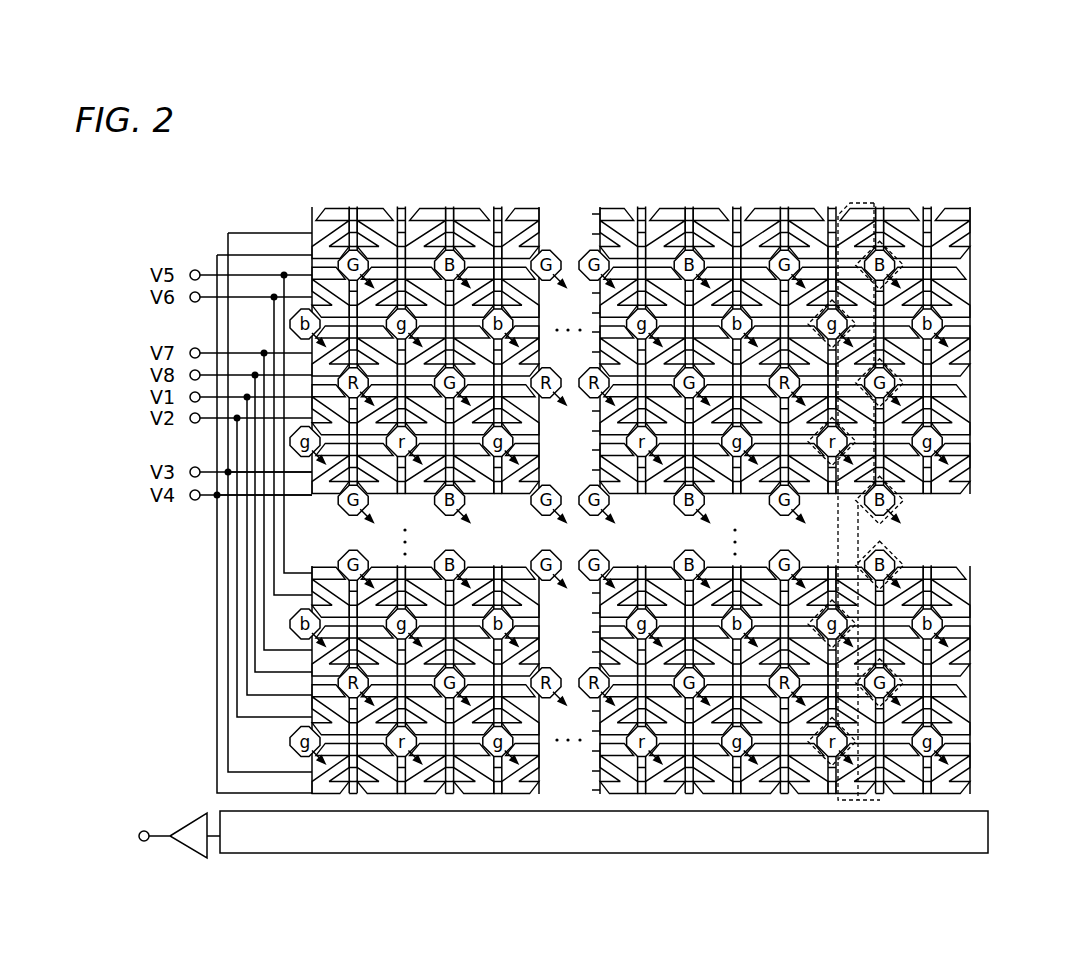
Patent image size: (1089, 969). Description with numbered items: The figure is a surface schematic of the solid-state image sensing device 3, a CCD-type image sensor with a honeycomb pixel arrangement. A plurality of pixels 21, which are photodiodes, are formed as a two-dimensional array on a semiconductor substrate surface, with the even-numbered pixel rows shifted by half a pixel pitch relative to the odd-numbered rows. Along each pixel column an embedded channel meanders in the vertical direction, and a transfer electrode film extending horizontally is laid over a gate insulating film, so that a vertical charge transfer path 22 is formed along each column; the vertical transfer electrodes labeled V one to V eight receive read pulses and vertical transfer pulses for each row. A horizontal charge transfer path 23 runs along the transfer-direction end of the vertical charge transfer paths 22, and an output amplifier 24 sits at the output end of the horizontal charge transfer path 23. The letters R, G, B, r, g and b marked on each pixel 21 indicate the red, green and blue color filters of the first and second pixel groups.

The solid-state image sensing device 3 is at (783, 172).
The pixel 21 is at (364, 257).
The vertical charge transfer path 22 is at (872, 200).
The horizontal charge transfer path 23 is at (988, 822).
The output amplifier 24 is at (188, 823).